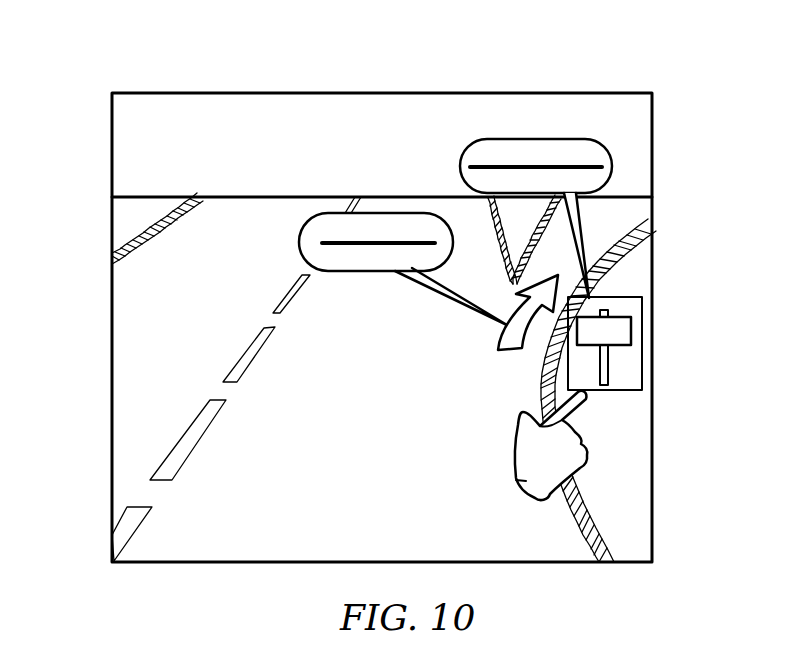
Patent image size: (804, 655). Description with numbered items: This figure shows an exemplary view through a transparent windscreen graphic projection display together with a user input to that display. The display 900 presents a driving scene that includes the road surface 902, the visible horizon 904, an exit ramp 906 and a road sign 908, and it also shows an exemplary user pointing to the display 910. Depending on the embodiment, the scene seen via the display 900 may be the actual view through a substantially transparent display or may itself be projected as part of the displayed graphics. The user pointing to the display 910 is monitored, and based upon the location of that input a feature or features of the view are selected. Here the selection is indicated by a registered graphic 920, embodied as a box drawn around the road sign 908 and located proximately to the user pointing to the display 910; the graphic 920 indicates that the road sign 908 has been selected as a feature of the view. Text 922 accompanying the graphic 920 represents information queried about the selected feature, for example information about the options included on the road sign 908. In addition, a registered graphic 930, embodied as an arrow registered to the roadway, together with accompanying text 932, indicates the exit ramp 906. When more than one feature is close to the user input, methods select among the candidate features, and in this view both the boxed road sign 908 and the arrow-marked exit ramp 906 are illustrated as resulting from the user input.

The display 900 is at (133, 82).
The road surface 902 is at (290, 357).
The visible horizon 904 is at (158, 196).
The exit ramp 906 is at (612, 215).
The road sign 908 is at (631, 333).
The user pointing to the display 910 is at (520, 481).
The registered graphic 920 is at (643, 305).
The text 922 is at (551, 138).
The registered graphic 930 is at (500, 353).
The text 932 is at (373, 272).